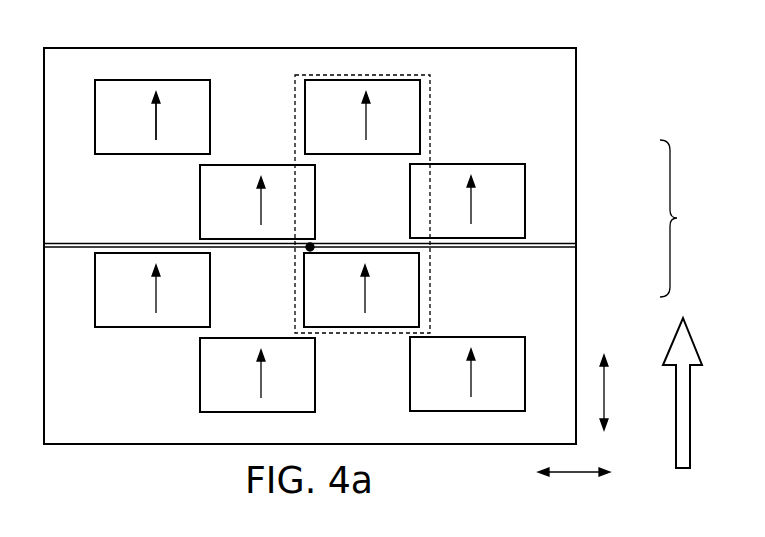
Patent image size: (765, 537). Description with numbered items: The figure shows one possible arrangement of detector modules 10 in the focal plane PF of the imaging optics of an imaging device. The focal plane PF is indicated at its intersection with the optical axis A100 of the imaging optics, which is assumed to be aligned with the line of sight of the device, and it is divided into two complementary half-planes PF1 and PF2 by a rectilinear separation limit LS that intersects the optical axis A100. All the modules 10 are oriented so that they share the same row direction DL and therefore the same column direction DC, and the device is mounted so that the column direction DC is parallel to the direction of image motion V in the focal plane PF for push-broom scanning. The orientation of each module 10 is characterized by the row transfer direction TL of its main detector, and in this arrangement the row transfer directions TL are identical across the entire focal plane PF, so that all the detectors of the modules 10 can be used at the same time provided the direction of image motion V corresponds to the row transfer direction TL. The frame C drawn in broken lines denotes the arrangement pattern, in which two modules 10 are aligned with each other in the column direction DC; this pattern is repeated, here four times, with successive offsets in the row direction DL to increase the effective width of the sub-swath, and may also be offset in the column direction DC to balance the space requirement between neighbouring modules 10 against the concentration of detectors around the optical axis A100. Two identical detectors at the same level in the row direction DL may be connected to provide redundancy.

The detector module 10 is at (310, 246).
The row transfer direction TL is at (173, 121).
The frame C is at (316, 74).
The optical axis A100 is at (312, 245).
The separation limit LS is at (548, 244).
The half-plane PF1 is at (576, 173).
The half-plane PF2 is at (609, 280).
The focal plane PF is at (681, 218).
The column direction DC is at (618, 392).
The row direction DL is at (574, 484).
The direction of image motion V is at (675, 450).